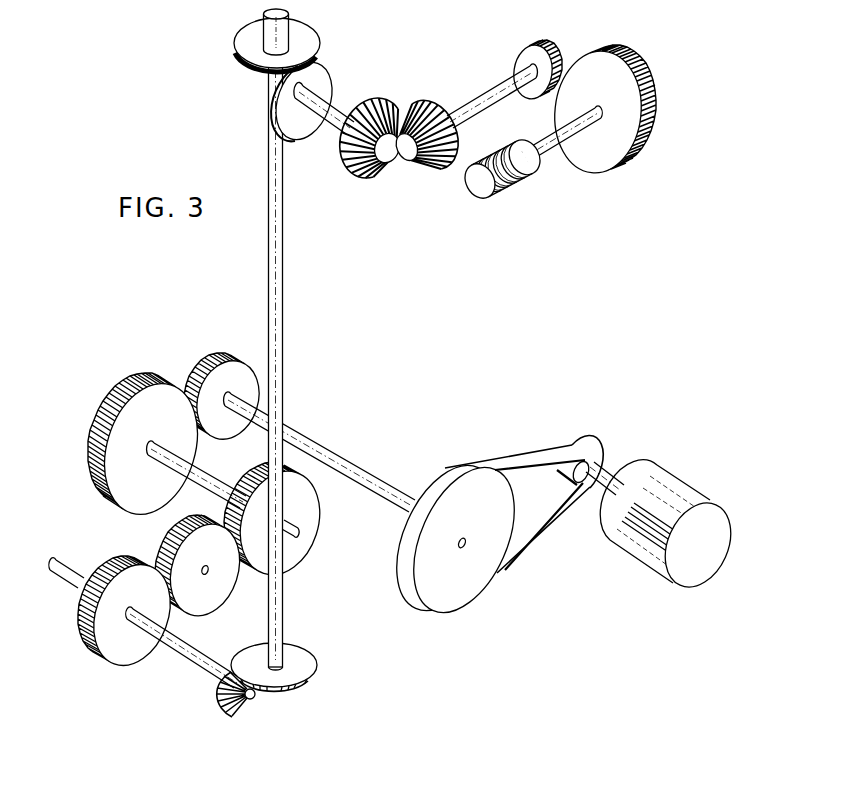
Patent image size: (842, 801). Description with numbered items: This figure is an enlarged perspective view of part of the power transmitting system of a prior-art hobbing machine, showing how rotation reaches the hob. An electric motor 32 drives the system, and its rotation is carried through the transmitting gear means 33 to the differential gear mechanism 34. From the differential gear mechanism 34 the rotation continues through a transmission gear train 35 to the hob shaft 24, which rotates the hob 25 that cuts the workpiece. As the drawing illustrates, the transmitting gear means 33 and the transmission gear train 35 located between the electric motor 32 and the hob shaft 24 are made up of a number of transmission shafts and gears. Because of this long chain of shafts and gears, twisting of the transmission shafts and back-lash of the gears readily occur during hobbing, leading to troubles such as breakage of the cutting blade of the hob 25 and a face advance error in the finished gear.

The hob shaft 24 is at (563, 146).
The hob 25 is at (502, 188).
The electric motor 32 is at (680, 489).
The transmitting gear means 33 is at (134, 388).
The differential gear mechanism 34 is at (125, 655).
The transmission gear train 35 is at (328, 75).